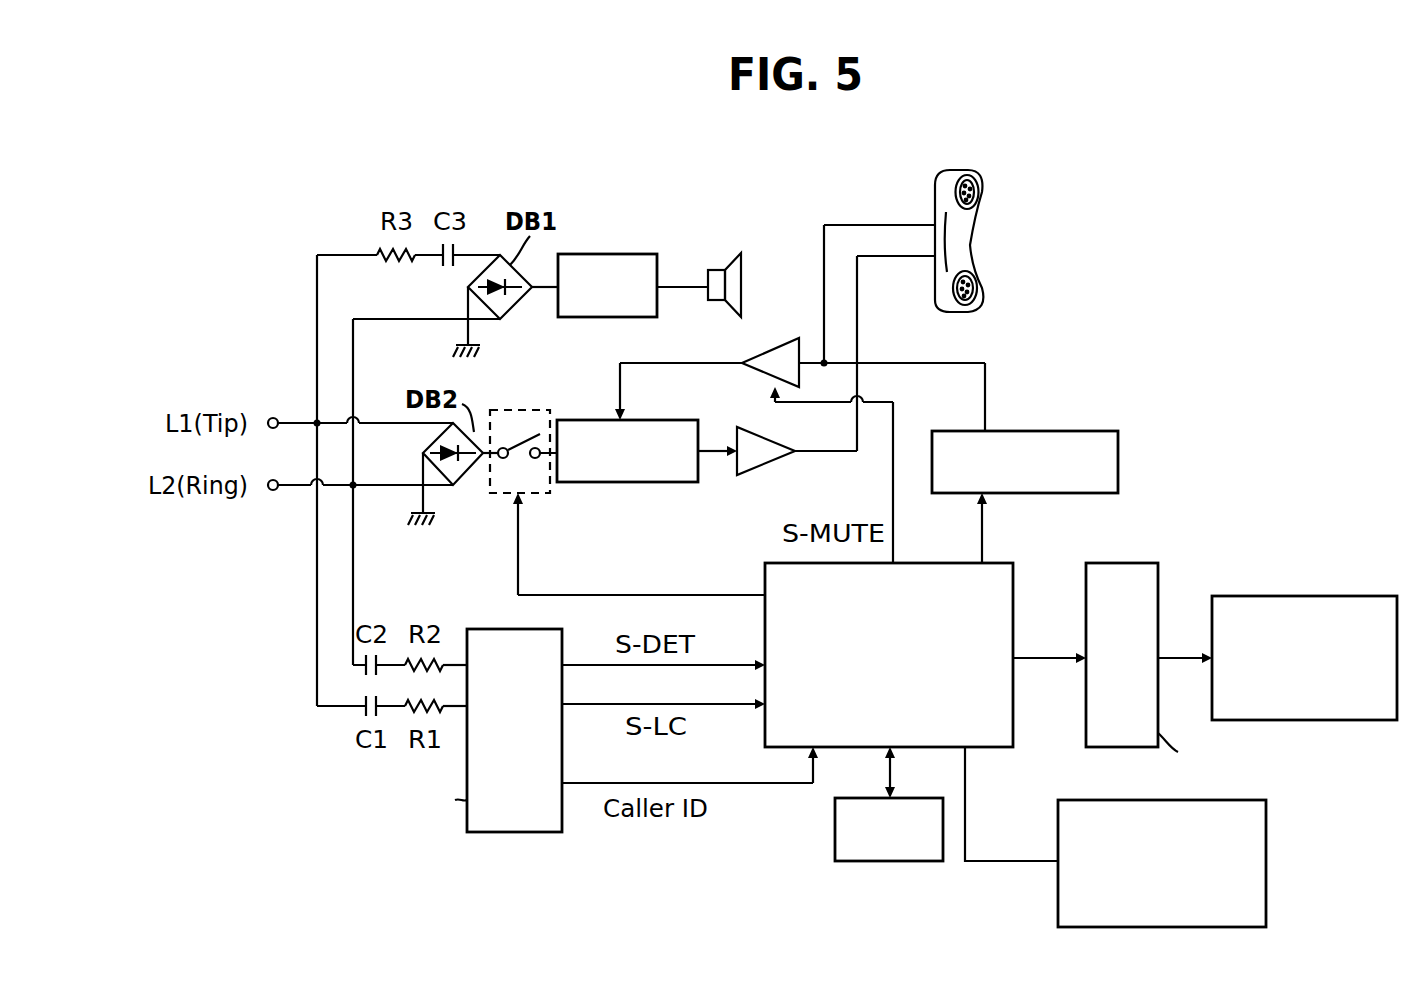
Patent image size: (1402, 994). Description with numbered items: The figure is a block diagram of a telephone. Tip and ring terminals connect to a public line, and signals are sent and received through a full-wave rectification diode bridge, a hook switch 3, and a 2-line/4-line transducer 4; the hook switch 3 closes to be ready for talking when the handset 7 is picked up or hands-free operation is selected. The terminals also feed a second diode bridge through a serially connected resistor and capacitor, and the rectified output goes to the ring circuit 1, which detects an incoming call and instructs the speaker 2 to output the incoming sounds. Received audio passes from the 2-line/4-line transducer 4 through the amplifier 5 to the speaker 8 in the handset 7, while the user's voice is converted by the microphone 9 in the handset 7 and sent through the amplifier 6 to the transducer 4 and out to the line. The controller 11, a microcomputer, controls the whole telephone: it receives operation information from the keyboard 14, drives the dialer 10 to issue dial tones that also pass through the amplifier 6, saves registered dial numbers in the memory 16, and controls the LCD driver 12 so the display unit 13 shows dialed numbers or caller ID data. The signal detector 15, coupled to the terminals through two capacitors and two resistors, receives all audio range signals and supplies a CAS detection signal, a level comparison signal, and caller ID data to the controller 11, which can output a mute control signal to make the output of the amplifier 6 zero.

The ring circuit 1 is at (610, 254).
The speaker 2 is at (745, 270).
The hook switch 3 is at (520, 410).
The 2-line/4-line transducer 4 is at (661, 420).
The amplifier 5 is at (766, 467).
The amplifier 6 is at (787, 338).
The handset 7 is at (1009, 228).
The speaker 8 is at (980, 193).
The microphone 9 is at (976, 296).
The dialer 10 is at (1040, 431).
The controller 11 is at (1015, 585).
The LCD driver 12 is at (1134, 563).
The display unit 13 is at (1338, 596).
The keyboard 14 is at (1266, 850).
The signal detector 15 is at (512, 832).
The memory 16 is at (889, 861).